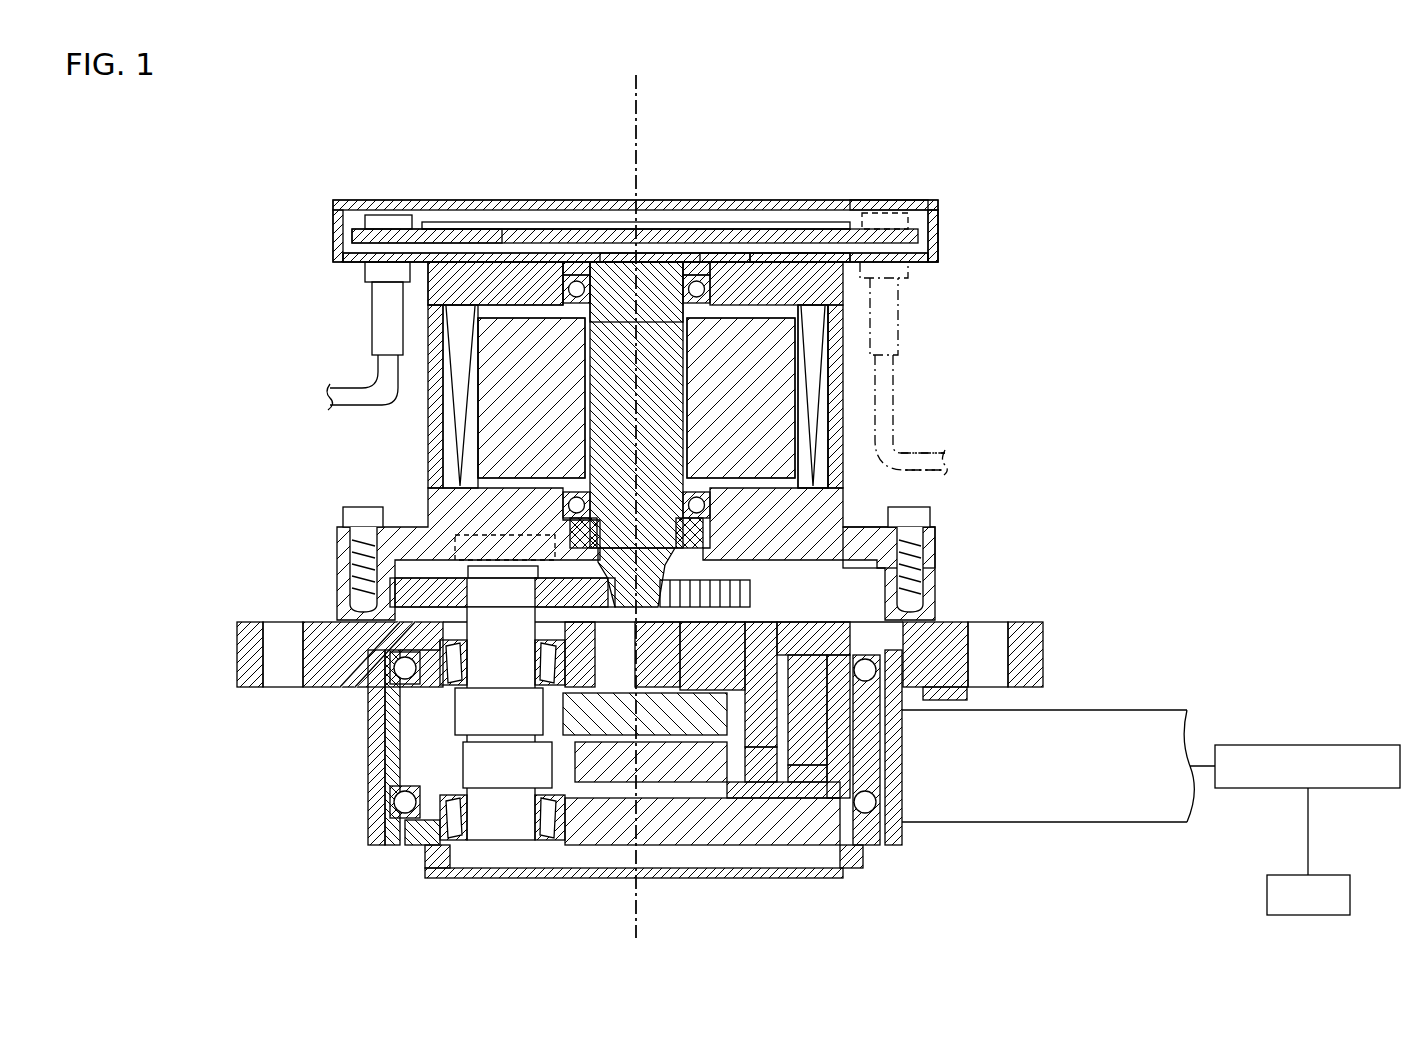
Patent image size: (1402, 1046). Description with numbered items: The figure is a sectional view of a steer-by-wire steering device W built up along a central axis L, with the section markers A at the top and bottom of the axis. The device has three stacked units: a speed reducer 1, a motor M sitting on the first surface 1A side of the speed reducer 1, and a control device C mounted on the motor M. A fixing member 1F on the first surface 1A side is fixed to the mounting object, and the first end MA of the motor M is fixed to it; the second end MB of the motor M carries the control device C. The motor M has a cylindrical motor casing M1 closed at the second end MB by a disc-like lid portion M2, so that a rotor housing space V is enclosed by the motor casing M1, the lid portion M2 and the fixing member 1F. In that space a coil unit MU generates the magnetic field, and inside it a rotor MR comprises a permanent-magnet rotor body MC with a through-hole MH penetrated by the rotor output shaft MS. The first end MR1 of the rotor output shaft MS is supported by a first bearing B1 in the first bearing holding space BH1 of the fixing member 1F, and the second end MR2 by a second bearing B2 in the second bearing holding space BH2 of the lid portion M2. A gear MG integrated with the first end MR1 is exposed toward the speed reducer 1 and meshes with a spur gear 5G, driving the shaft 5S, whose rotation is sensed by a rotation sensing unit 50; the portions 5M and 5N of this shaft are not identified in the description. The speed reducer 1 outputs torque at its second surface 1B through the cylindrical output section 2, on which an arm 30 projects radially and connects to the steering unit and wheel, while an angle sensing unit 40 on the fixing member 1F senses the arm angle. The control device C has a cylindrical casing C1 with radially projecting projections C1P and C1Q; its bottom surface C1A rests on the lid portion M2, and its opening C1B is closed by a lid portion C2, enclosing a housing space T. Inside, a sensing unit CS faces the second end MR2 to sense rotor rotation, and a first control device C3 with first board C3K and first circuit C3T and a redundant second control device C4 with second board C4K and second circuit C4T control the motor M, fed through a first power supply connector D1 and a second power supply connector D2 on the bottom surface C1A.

The section line A- A is at (612, 57).
The central axis L is at (634, 506).
The control device C is at (868, 136).
The lid portion C2 is at (900, 200).
The opening C1B is at (925, 202).
The projection C1Q is at (330, 236).
The casing C1 is at (940, 212).
The projection C1P is at (950, 224).
The bottom surface C1A is at (921, 268).
The first control device C3 is at (650, 222).
The sensing unit CS is at (672, 242).
The first board C3K is at (748, 240).
The second bearing B2 is at (776, 238).
The second control device C4 is at (612, 222).
The second board C4K is at (480, 242).
The second circuit C4T is at (426, 223).
The first circuit C3T is at (730, 222).
The housing space T is at (418, 220).
The second end MB is at (388, 253).
The second power supply connector D2 is at (380, 320).
The motor casing M1 is at (430, 362).
The motor M is at (860, 318).
The lid portion M2 is at (470, 272).
The rotor housing space V is at (508, 311).
The coil unit MU is at (822, 432).
The rotor body MC is at (773, 355).
The rotor output shaft MS is at (690, 408).
The rotor MR is at (1020, 326).
The through-hole MH is at (598, 340).
The second end MR2 is at (664, 262).
The second bearing holding space BH2 is at (575, 285).
The first bearing holding space BH1 is at (700, 508).
The first end MA is at (430, 500).
The fixing member 1F is at (843, 508).
The rotation sensing unit 50 is at (440, 545).
The first end MR1 is at (680, 574).
The spur gear 5G is at (408, 592).
The first power supply connector D1 is at (905, 290).
The first bearing B1 is at (940, 473).
The first surface 1A is at (856, 612).
The angle sensing unit 40 is at (966, 695).
The speed reducer 1 is at (922, 758).
The gear MG is at (786, 640).
The output section 2 is at (898, 790).
The shaft 5S is at (481, 832).
The worm wheel 5M is at (495, 722).
The shaft lower portion 5N is at (515, 775).
The second surface 1B is at (762, 884).
The arm 30 is at (1140, 822).
The steering device W is at (306, 906).